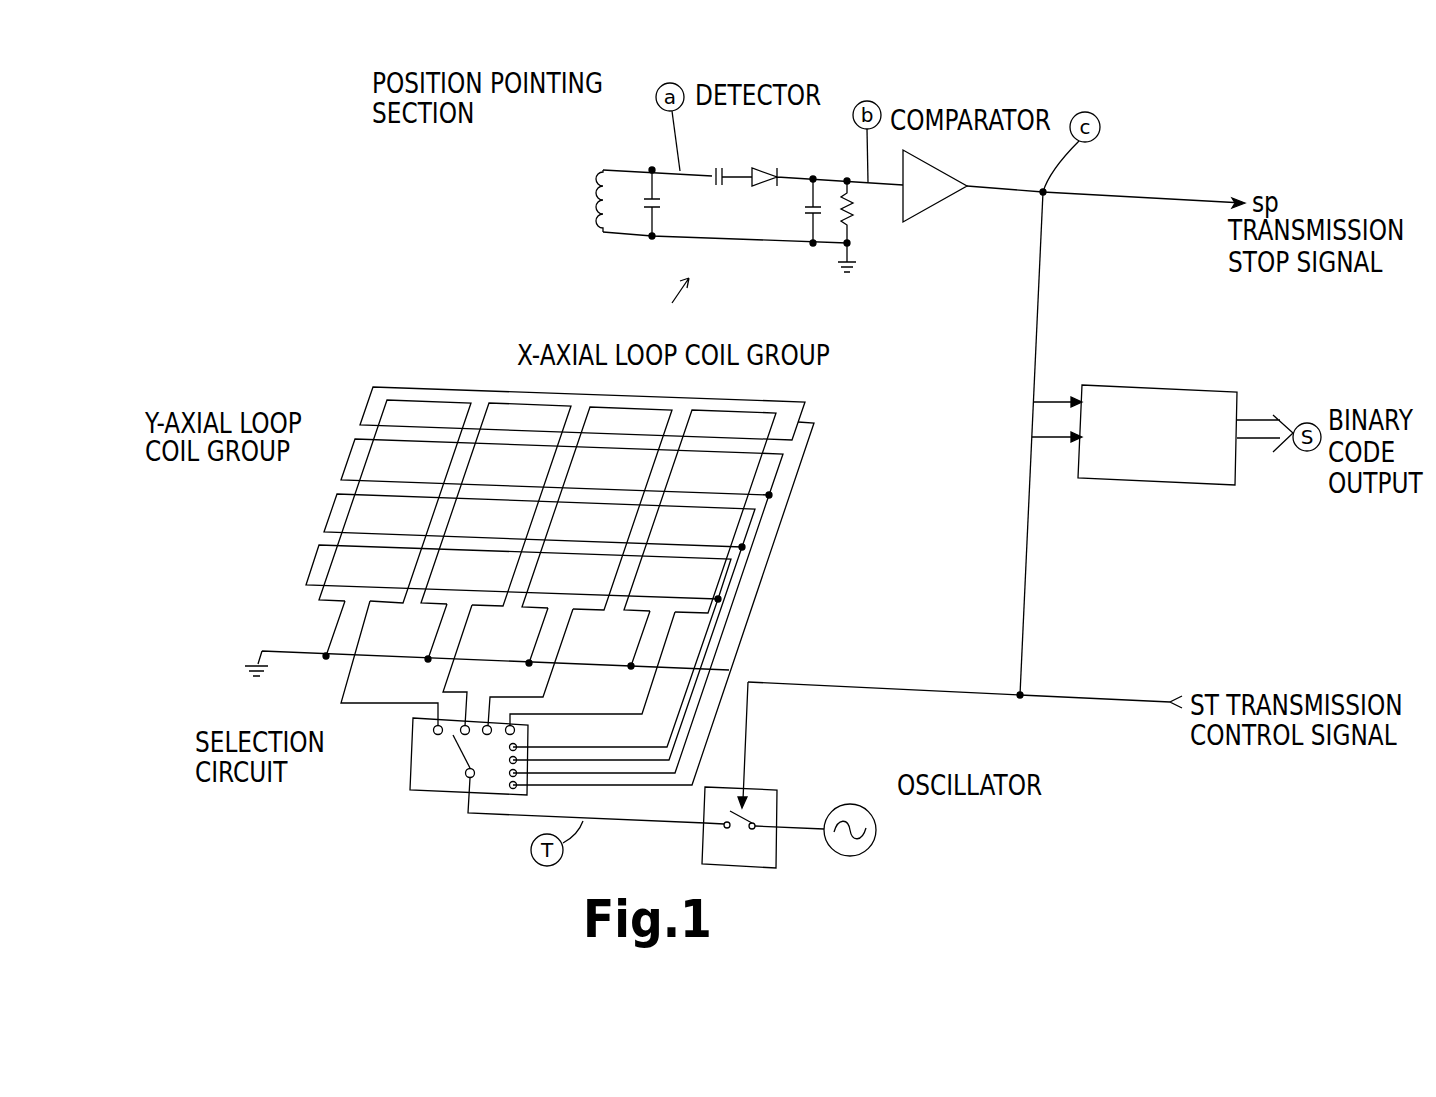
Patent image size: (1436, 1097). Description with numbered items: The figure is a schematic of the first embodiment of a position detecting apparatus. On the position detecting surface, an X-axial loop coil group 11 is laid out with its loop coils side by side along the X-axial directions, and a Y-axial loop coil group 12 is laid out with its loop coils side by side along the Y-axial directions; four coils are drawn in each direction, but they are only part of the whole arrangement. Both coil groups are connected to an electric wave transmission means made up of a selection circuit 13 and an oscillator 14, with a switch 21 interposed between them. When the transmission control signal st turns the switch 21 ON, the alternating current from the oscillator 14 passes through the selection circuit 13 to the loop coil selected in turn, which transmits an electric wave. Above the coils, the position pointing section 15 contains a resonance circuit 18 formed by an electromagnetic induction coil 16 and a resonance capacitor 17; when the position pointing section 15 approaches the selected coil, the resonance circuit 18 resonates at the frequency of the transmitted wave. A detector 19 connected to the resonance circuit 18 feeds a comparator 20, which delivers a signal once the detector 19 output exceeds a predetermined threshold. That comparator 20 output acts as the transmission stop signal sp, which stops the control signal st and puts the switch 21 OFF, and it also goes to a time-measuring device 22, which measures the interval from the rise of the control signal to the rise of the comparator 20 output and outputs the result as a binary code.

The X-axial loop coil group 11 is at (683, 420).
The Y-axial loop coil group 12 is at (303, 577).
The selection circuit 13 is at (413, 755).
The oscillator 14 is at (870, 814).
The position pointing section 15 is at (606, 157).
The electromagnetic induction coil 16 is at (590, 190).
The resonance capacitor 17 is at (645, 207).
The resonance circuit 18 is at (532, 187).
The detector 19 is at (847, 157).
The comparator 20 is at (948, 184).
The switch 21 is at (768, 793).
The time-measuring device 22 is at (1233, 392).